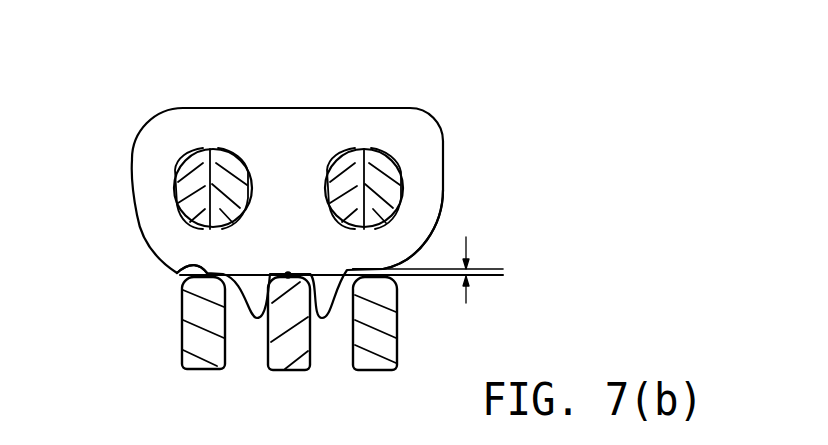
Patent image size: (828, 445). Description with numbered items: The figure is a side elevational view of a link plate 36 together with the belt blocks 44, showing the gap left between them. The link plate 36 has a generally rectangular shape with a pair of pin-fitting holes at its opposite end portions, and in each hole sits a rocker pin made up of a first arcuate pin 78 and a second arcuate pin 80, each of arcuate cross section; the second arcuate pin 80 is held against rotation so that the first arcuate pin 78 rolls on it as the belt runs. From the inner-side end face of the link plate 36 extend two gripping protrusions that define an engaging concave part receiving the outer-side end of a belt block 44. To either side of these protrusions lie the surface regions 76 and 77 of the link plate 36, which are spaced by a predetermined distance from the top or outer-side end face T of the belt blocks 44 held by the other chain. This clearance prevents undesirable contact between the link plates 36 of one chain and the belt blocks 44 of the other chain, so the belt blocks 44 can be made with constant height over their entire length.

The link plate 36 is at (298, 125).
The first arcuate pin 78 is at (187, 161).
The second arcuate pin 80 is at (233, 161).
The surface region 76 is at (173, 272).
The surface region 77 is at (375, 268).
The belt block 44 is at (308, 366).
The outer-side end face of the belt block T is at (289, 272).